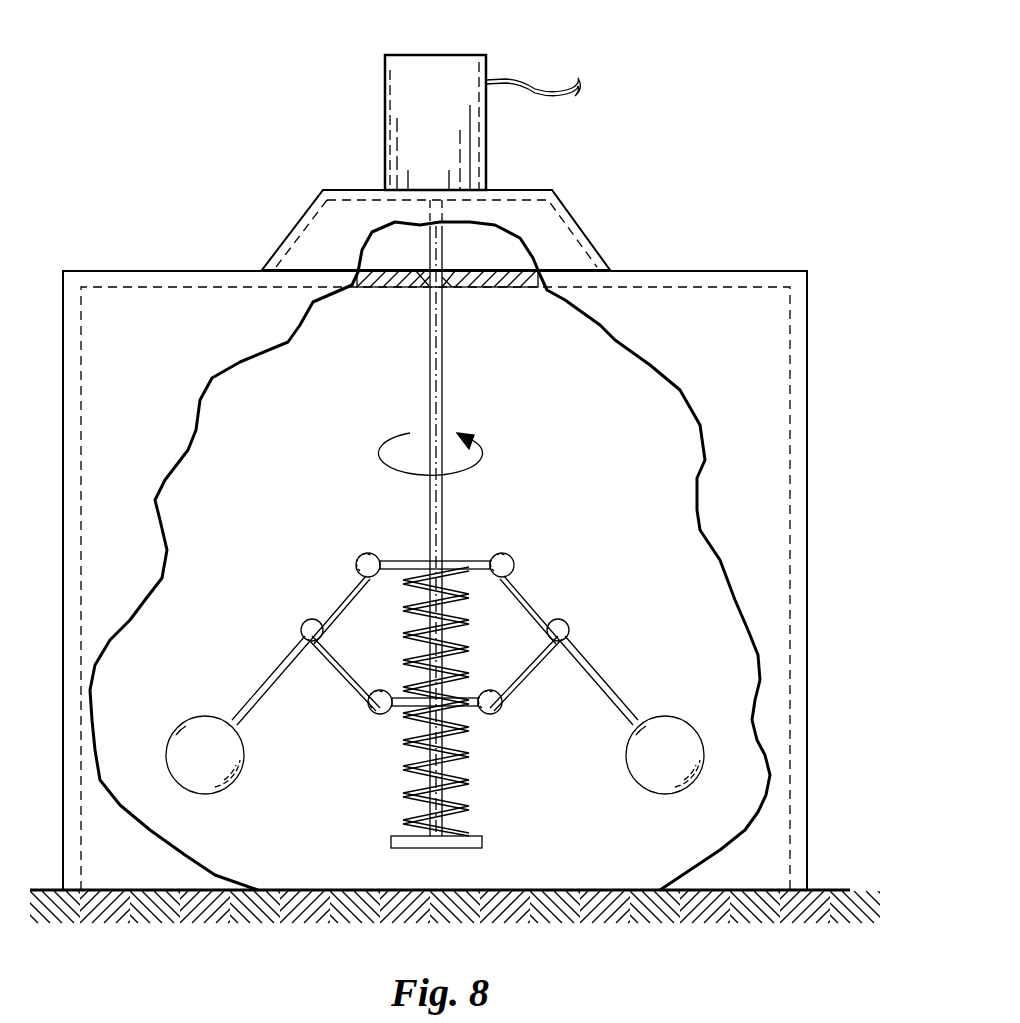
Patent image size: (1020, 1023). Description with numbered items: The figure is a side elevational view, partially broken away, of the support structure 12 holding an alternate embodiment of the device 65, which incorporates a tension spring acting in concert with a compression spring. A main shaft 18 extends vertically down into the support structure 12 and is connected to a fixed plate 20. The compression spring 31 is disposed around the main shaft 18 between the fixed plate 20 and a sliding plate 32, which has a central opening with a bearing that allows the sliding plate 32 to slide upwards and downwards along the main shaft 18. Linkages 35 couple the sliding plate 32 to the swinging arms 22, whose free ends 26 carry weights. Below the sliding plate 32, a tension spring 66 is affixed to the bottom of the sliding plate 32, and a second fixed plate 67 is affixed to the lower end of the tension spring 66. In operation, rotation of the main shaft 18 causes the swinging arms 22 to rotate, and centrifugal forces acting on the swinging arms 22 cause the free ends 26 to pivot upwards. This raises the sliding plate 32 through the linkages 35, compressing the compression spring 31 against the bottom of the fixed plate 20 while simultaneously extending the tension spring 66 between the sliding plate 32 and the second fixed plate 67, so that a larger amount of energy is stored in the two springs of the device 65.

The support structure 12 is at (810, 830).
The main shaft 18 is at (440, 405).
The fixed plate 20 is at (465, 560).
The swinging arms 22 is at (255, 683).
The free ends 26 is at (178, 722).
The compression spring 31 is at (400, 600).
The sliding plate 32 is at (400, 702).
The linkages 35 is at (345, 675).
The device 65 is at (760, 81).
The tension spring 66 is at (465, 758).
The second fixed plate 67 is at (485, 841).